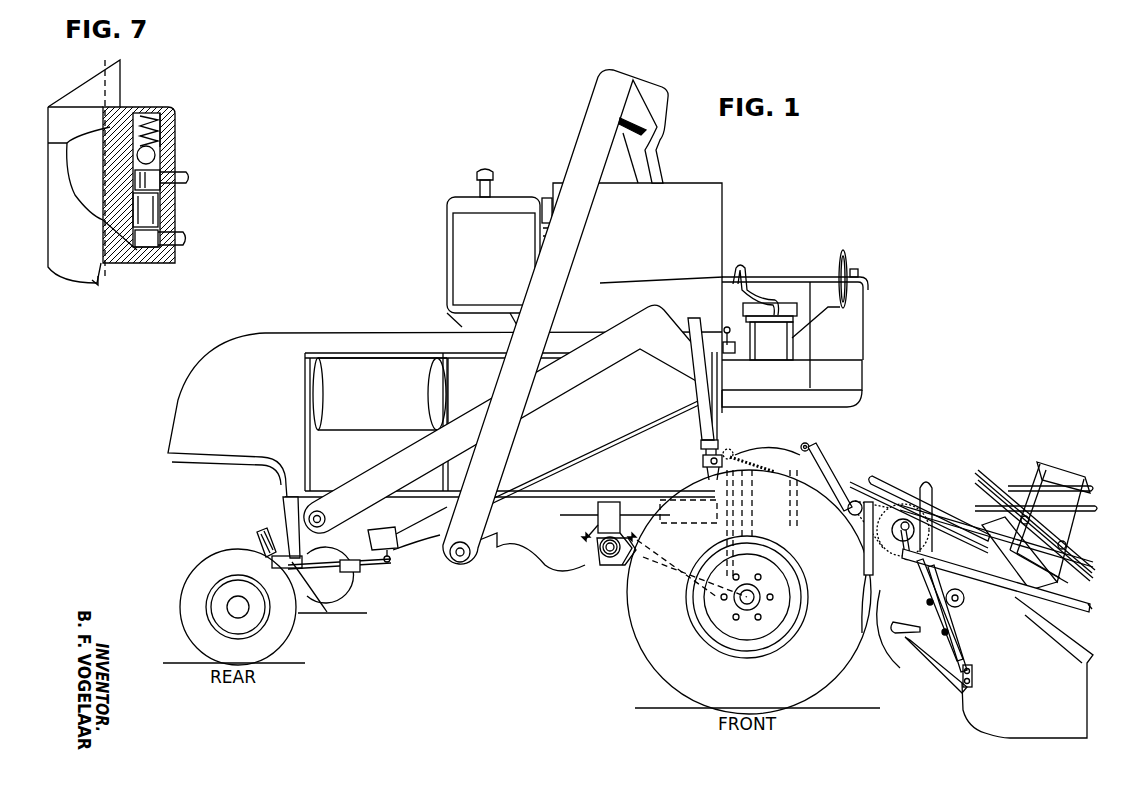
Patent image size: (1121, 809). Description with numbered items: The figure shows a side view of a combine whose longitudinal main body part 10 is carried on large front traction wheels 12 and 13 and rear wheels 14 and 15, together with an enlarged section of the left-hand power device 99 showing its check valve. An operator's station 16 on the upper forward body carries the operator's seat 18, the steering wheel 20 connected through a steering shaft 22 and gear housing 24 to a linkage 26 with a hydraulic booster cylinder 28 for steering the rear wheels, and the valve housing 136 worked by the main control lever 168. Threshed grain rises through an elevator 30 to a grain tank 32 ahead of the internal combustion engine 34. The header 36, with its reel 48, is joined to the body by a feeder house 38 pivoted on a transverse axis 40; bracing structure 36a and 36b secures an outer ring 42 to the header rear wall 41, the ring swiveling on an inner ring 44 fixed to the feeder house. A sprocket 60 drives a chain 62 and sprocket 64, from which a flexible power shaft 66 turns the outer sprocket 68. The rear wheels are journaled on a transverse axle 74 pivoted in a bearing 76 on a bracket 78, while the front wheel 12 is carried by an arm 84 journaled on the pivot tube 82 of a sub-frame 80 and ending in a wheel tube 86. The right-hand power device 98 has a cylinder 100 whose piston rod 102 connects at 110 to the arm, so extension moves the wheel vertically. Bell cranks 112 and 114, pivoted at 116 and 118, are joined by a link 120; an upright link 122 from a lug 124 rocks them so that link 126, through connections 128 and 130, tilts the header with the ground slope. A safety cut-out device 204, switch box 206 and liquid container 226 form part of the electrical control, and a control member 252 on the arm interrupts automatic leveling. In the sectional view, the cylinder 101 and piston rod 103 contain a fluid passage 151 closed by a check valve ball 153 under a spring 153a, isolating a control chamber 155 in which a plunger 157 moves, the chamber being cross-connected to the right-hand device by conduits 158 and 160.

In FIG. 7, the left-hand power-operated device 99 is at (82, 79).
In FIG. 7, the cylinder 101 is at (60, 252).
In FIG. 7, the piston rod 103 is at (97, 285).
In FIG. 7, the fluid passage 151 is at (121, 146).
In FIG. 7, the check valve spring 153a is at (168, 117).
In FIG. 7, the check valve ball 153 is at (155, 155).
In FIG. 7, the check-valve-control chamber 155 is at (158, 183).
In FIG. 7, the check-valve-control plunger 157 is at (147, 212).
In FIG. 7, the conduit 158 is at (190, 175).
In FIG. 7, the conduit 160 is at (190, 238).
In FIG. 1, the main body part 10 is at (393, 338).
In FIG. 1, the right-hand front wheel 12 is at (843, 662).
In FIG. 1, the left-hand front wheel 13 is at (770, 447).
In FIG. 1, the right-hand rear wheel 14 is at (282, 635).
In FIG. 1, the left-hand rear wheel 15 is at (345, 585).
In FIG. 1, the operator's station 16 is at (862, 375).
In FIG. 1, the operator's seat 18 is at (743, 272).
In FIG. 1, the steering wheel 20 is at (843, 251).
In FIG. 1, the steering shaft 22 is at (628, 436).
In FIG. 1, the gear housing 24 is at (384, 533).
In FIG. 1, the steering linkage 26 is at (381, 563).
In FIG. 1, the hydraulic booster cylinder 28 is at (358, 568).
In FIG. 1, the elevator 30 is at (583, 147).
In FIG. 1, the grain tank 32 is at (707, 183).
In FIG. 1, the internal combustion engine 34 is at (460, 232).
In FIG. 1, the header 36 is at (1033, 725).
In FIG. 1, the bracing structure 36a is at (908, 500).
In FIG. 1, the bracing structure 36b is at (922, 637).
In FIG. 1, the feeder house 38 is at (893, 605).
In FIG. 1, the pivot axis 40 is at (710, 452).
In FIG. 1, the rear wall of the header 41 is at (965, 623).
In FIG. 1, the outer ring 42 is at (928, 480).
In FIG. 1, the inner ring 44 is at (923, 530).
In FIG. 1, the reel 48 is at (1057, 473).
In FIG. 1, the sprocket 60 is at (729, 450).
In FIG. 1, the chain 62 is at (753, 460).
In FIG. 1, the sprocket 64 is at (892, 530).
In FIG. 1, the flexible power shaft 66 is at (923, 582).
In FIG. 1, the outer sprocket 68 is at (964, 604).
In FIG. 1, the transverse axle 74 is at (297, 578).
In FIG. 1, the bearing 76 is at (260, 541).
In FIG. 1, the bracket 78 is at (285, 519).
In FIG. 1, the sub-frame 80 is at (640, 510).
In FIG. 1, the pivot tube 82 is at (598, 565).
In FIG. 1, the wheel-supported arm 84 is at (630, 550).
In FIG. 1, the wheel tube 86 is at (747, 604).
In FIG. 1, the right-hand power-operated device 98 is at (708, 311).
In FIG. 1, the cylinder 100 is at (702, 372).
In FIG. 1, the piston rod 102 is at (685, 520).
In FIG. 1, the articulate connection 110 is at (700, 552).
In FIG. 1, the rear bell crank 112 is at (805, 443).
In FIG. 1, the front bell crank 114 is at (877, 469).
In FIG. 1, the pivot 116 is at (752, 525).
In FIG. 1, the pivot 118 is at (848, 510).
In FIG. 1, the link 120 is at (822, 467).
In FIG. 1, the upright link 122 is at (758, 505).
In FIG. 1, the lug 124 is at (779, 500).
In FIG. 1, the upright link 126 is at (927, 525).
In FIG. 1, the connection 128 is at (953, 497).
In FIG. 1, the connection 130 is at (893, 557).
In FIG. 1, the valve housing 136 is at (735, 353).
In FIG. 1, the main control lever 168 is at (730, 332).
In FIG. 1, the safety cut-out device 204 is at (612, 502).
In FIG. 1, the main control switch box 206 is at (547, 198).
In FIG. 1, the liquid container 226 is at (538, 236).
In FIG. 1, the control member 252 is at (587, 537).